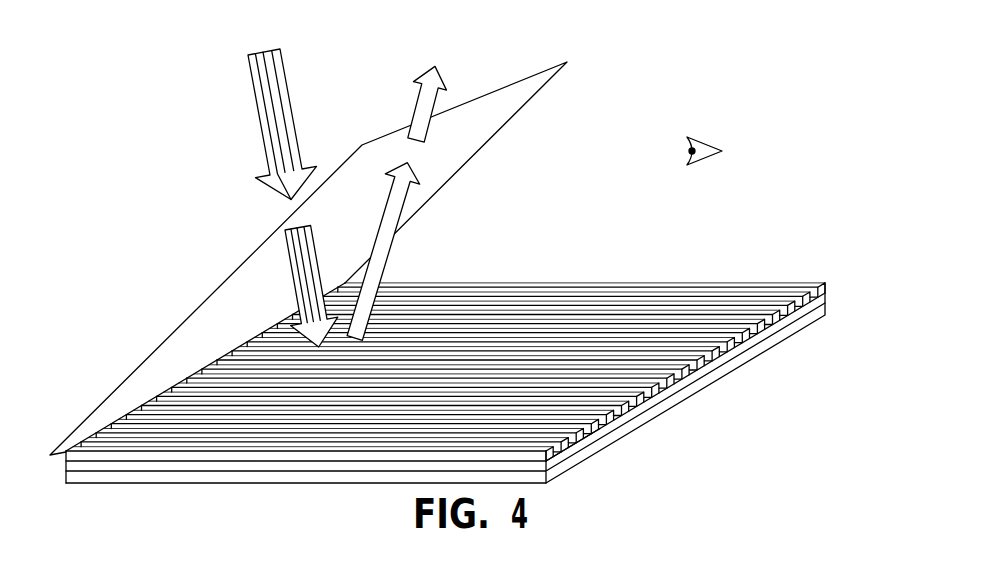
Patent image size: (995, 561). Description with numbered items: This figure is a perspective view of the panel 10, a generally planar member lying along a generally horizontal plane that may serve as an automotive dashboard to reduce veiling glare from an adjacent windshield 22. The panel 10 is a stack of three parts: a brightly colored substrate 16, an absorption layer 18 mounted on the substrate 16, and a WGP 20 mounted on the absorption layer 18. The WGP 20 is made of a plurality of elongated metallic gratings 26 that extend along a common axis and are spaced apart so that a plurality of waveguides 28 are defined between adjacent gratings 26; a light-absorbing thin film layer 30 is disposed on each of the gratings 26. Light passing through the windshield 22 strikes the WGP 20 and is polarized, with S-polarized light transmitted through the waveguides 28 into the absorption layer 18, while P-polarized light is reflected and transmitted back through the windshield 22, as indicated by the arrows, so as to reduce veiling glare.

The panel 10 is at (451, 367).
The substrate 16 is at (778, 338).
The absorption layer 18 is at (815, 307).
The WGP 20 is at (826, 266).
The windshield 22 is at (553, 84).
The metallic gratings 26 is at (82, 462).
The waveguides 28 is at (562, 452).
The thin film layer 30 is at (66, 457).